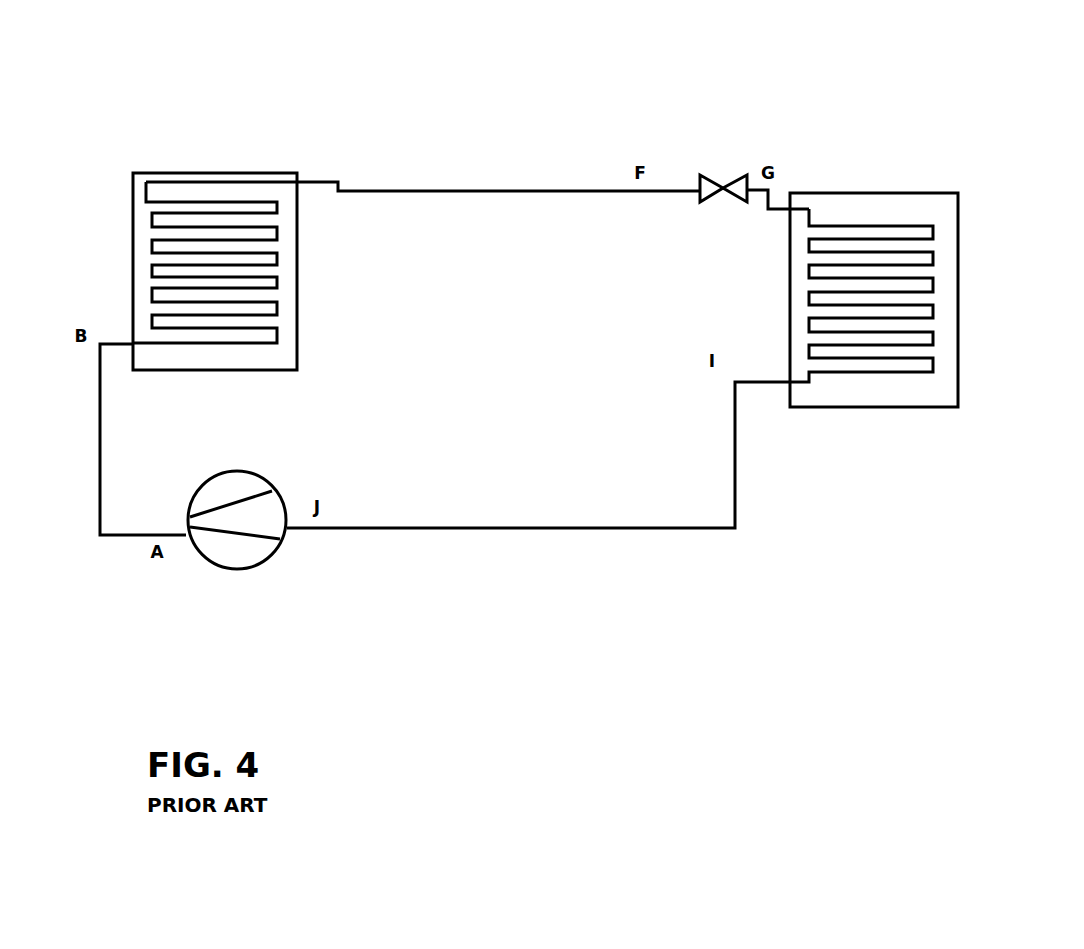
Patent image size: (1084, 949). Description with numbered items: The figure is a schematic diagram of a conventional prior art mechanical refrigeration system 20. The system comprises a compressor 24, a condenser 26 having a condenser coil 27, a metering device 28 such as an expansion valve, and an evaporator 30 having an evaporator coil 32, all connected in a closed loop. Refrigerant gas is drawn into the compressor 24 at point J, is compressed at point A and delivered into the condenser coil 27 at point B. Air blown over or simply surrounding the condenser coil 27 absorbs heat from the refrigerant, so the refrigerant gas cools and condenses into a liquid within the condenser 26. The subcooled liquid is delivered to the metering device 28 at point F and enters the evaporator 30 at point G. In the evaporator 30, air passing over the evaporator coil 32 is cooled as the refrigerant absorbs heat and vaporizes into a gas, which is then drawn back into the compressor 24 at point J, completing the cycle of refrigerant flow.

The mechanical refrigeration system 20 is at (455, 128).
The compressor 24 is at (262, 562).
The condenser 26 is at (132, 237).
The condenser coil 27 is at (236, 200).
The metering device 28 is at (733, 182).
The evaporator 30 is at (882, 411).
The evaporator coil 32 is at (922, 375).